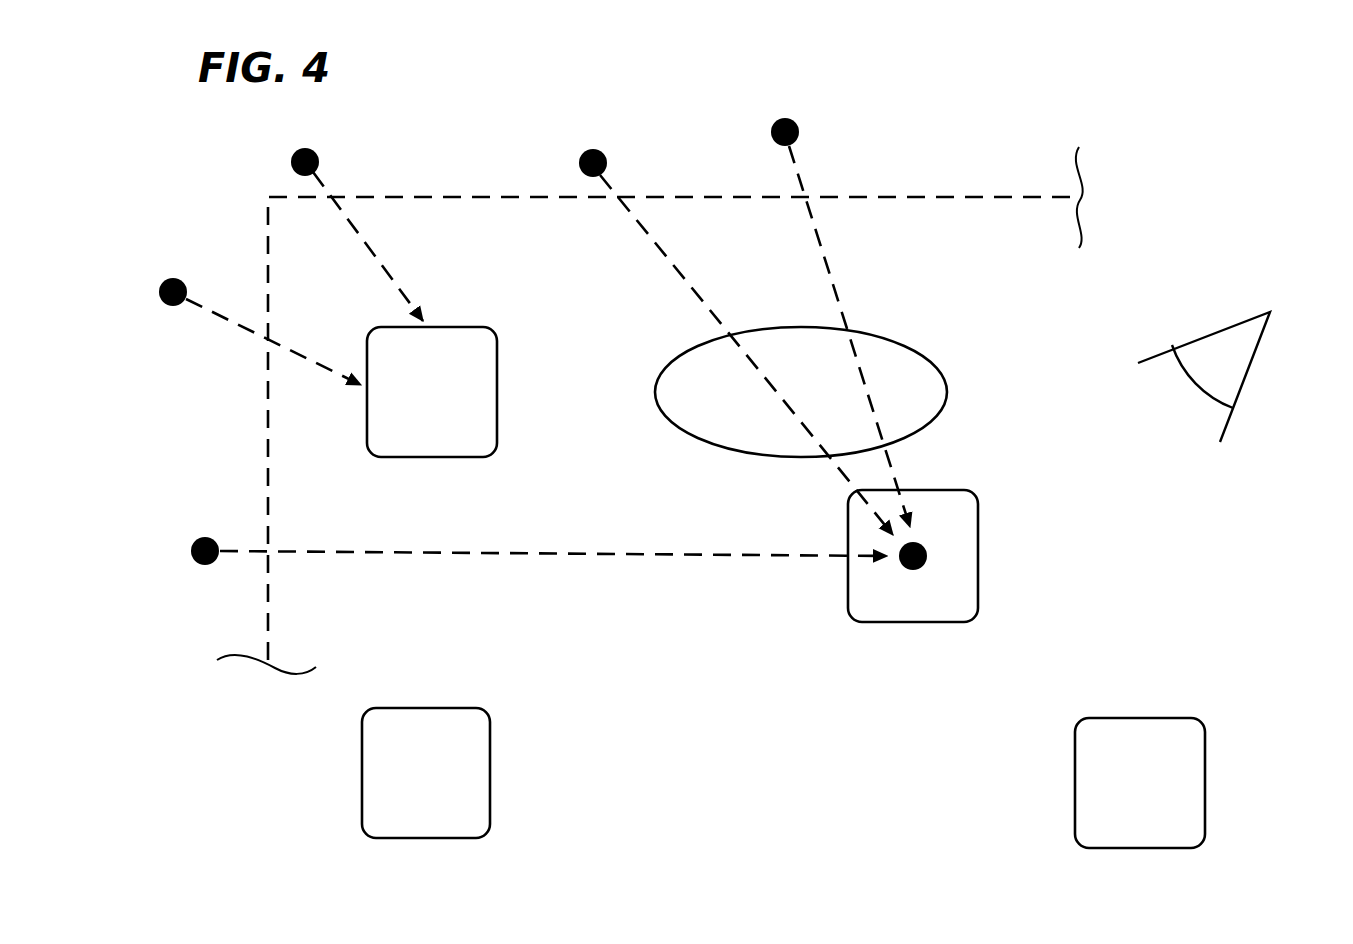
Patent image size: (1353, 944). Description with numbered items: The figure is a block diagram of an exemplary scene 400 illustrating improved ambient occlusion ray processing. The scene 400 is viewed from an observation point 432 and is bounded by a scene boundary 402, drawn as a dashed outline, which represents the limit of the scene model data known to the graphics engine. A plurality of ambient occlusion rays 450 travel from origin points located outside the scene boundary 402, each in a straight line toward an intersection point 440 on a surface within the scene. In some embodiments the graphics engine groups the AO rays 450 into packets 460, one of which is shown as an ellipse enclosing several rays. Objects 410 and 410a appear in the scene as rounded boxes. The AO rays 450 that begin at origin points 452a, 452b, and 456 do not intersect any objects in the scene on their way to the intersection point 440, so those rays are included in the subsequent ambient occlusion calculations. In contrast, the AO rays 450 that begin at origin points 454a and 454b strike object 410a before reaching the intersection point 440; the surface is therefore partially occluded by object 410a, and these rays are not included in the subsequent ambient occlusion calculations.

The scene 400 is at (1262, 110).
The scene boundary 402 is at (268, 446).
The object 410 is at (490, 775).
The object 410a is at (497, 430).
The observation point 432 is at (1215, 330).
The intersection point 440 is at (927, 556).
The ambient occlusion rays 450 is at (360, 238).
The origin point 452a is at (797, 138).
The origin point 452b is at (580, 168).
The origin point 454a is at (313, 150).
The origin point 454b is at (178, 280).
The origin point 456 is at (203, 566).
The packet 460 is at (945, 395).